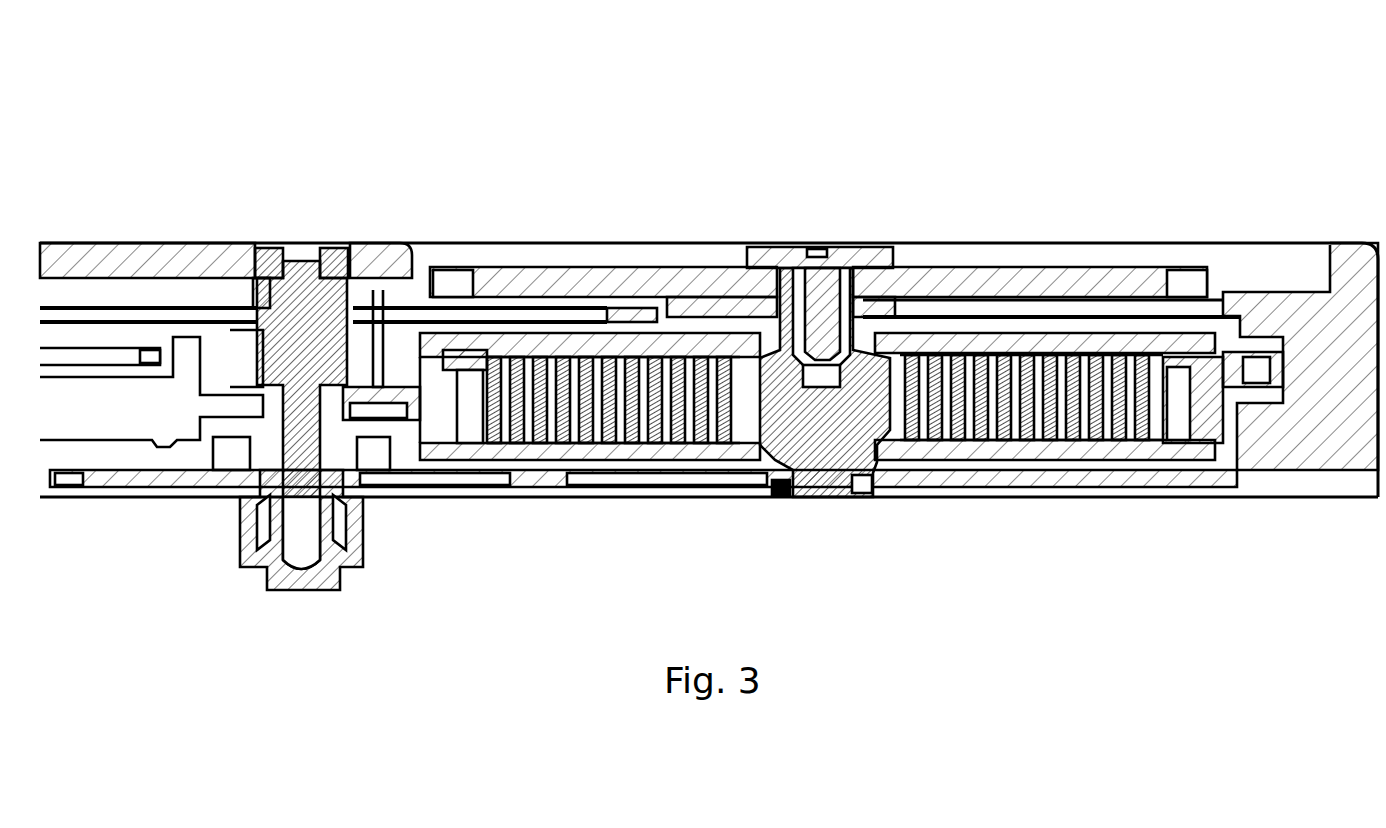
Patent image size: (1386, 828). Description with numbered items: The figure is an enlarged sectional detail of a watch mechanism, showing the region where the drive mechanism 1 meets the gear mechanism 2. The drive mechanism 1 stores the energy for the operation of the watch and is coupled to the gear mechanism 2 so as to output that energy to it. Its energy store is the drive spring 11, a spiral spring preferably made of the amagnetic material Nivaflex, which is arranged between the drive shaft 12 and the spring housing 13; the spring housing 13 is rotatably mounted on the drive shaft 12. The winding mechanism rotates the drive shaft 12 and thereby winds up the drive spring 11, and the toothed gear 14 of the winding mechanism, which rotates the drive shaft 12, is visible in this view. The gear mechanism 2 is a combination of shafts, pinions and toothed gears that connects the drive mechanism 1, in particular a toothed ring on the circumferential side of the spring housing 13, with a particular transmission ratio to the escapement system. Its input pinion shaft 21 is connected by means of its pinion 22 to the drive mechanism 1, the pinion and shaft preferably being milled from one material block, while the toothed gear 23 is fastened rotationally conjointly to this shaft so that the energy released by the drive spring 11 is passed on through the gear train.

The drive mechanism 1 is at (972, 95).
The gear mechanism 2 is at (163, 140).
The drive spring 11 is at (1012, 445).
The drive shaft 12 is at (813, 440).
The spring housing 13 is at (1197, 440).
The toothed gear 14 is at (712, 292).
The input pinion shaft 21 is at (310, 567).
The pinion 22 is at (250, 363).
The toothed gear 23 is at (427, 305).